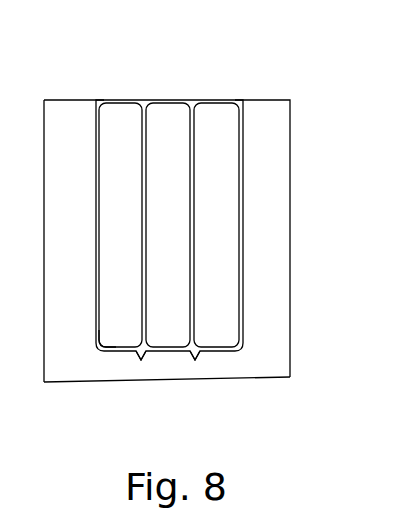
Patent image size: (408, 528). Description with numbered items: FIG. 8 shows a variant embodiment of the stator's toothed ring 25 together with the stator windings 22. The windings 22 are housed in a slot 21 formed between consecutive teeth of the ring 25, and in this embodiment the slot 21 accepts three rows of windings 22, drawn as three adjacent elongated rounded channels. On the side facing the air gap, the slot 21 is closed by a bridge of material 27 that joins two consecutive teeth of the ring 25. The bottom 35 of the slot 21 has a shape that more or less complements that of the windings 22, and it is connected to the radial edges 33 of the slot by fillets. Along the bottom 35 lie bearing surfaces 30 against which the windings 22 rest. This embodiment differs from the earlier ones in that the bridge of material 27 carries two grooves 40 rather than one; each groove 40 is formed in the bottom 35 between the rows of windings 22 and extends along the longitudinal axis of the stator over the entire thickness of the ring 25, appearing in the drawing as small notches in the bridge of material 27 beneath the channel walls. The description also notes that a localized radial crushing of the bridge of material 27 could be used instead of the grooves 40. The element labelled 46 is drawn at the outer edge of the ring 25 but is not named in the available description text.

The slot 21 is at (212, 118).
The winding 22 is at (118, 118).
The toothed ring 25 is at (252, 118).
The bridge of material 27 is at (113, 362).
The bearing surface 30 is at (130, 345).
The radial edge 33 is at (242, 165).
The bottom of the slot 35 is at (172, 345).
The groove 40 is at (141, 360).
The plate edge 46 is at (265, 388).